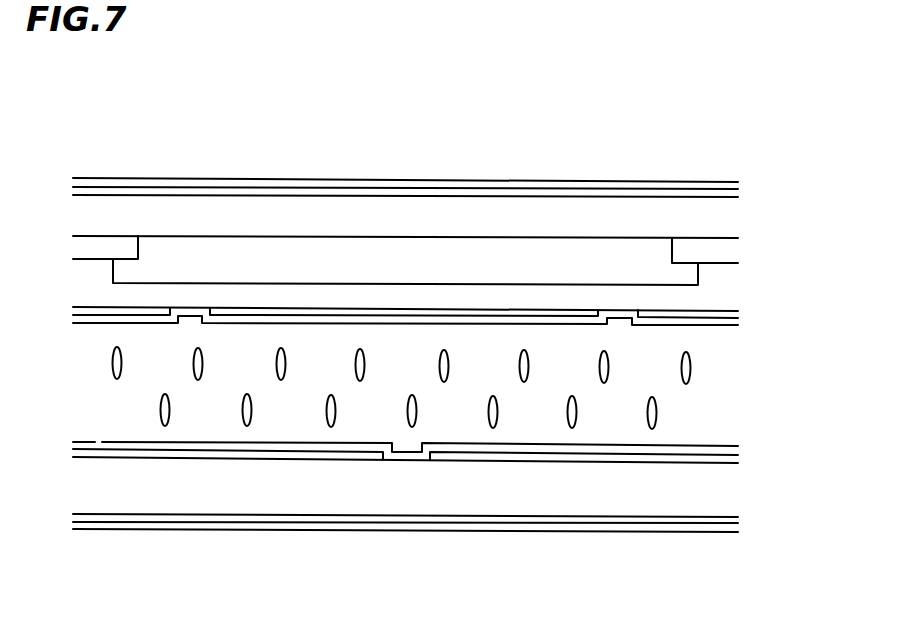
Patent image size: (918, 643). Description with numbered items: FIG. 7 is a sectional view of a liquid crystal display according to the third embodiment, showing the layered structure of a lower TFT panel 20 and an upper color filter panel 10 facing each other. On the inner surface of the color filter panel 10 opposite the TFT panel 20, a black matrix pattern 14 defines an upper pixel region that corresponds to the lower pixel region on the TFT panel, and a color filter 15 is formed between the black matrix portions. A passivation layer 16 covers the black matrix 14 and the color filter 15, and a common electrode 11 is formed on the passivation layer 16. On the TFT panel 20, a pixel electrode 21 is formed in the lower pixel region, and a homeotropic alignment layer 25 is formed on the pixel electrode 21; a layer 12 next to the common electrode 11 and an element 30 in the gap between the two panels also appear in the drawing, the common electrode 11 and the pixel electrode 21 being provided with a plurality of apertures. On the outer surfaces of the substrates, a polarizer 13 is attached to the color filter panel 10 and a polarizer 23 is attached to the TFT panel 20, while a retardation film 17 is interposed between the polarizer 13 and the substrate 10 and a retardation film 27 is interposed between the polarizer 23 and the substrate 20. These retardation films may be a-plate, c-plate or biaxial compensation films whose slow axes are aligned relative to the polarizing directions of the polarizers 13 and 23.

The polarizer 13 is at (735, 182).
The retardation film 17 is at (738, 190).
The color filter panel 10 is at (732, 217).
The black matrix pattern 14 is at (732, 255).
The color filter 15 is at (705, 280).
The passivation layer 16 is at (688, 293).
The common electrode 11 is at (745, 319).
The protrusion 12 is at (710, 325).
The liquid crystal molecules 30 is at (690, 372).
The homeotropic alignment layer 25 is at (712, 447).
The pixel electrode 21 is at (740, 455).
The TFT panel 20 is at (728, 502).
The retardation film 27 is at (730, 522).
The polarizer 23 is at (730, 532).